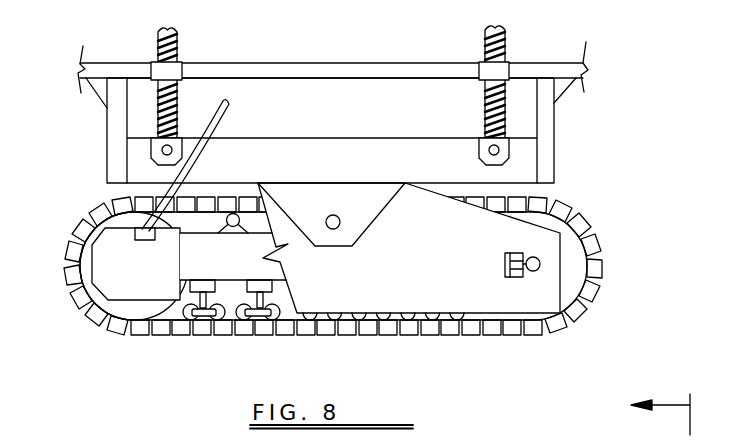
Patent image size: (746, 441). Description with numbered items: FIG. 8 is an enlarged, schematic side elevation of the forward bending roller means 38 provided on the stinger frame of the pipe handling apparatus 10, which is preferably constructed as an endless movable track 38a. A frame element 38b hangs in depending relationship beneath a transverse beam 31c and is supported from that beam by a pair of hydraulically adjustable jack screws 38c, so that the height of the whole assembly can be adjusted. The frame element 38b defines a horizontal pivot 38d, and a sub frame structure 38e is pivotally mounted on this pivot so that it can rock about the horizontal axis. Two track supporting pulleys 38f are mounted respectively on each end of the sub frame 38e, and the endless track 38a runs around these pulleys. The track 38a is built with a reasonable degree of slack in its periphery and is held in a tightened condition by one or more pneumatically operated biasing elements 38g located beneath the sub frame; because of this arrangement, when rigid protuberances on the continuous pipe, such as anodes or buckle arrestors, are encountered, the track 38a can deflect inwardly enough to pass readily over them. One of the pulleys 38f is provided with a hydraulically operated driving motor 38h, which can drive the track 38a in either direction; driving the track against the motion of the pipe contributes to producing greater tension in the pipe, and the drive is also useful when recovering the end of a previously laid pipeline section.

The well pipe handling apparatus 10 is at (647, 414).
The transverse beam 31c is at (319, 62).
The forward bending roller means 38 is at (618, 206).
The endless movable track 38a is at (586, 306).
The frame element 38b is at (357, 168).
The hydraulically adjustable jack screws 38c is at (178, 40).
The horizontal pivot 38d is at (339, 226).
The sub frame structure 38e is at (420, 286).
The track supporting pulleys 38f is at (95, 234).
The pneumatically operated biasing elements 38g is at (208, 318).
The hydraulically operated driving motor 38h is at (160, 278).